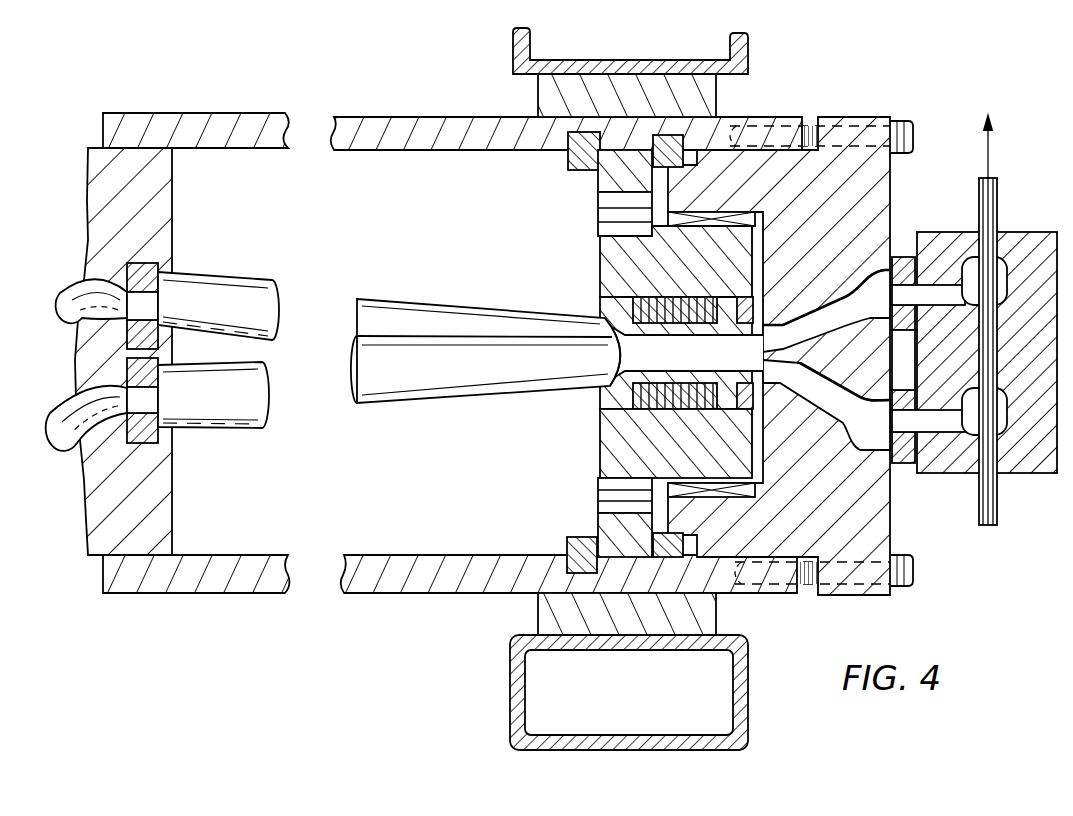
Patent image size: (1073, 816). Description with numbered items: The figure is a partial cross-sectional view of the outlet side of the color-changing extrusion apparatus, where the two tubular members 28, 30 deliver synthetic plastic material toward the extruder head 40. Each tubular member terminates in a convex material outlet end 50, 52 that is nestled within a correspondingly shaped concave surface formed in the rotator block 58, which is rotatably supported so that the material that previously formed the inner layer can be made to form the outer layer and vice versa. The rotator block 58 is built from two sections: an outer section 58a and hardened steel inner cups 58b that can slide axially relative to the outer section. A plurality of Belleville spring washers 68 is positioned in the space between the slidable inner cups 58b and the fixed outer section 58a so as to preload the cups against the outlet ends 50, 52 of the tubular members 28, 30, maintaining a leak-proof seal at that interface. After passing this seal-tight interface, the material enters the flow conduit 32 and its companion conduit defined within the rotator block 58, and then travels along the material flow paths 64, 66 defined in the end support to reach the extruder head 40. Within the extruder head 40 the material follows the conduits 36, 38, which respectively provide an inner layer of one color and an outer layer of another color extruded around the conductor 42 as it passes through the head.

The tubular member 28 is at (459, 364).
The tubular member 30 is at (234, 310).
The synthetic material flow conduit 32 is at (760, 353).
The conduit (flow path) 36 is at (942, 420).
The conduit (flow path) 38 is at (933, 290).
The extruder head 40 is at (1037, 257).
The conductor 42 is at (990, 498).
The material outlet end 50 is at (596, 352).
The material outlet end 52 is at (597, 318).
The rotator block 58 is at (636, 353).
The outer section 58a is at (615, 428).
The inner cups 58b is at (598, 293).
The material flow path 64 is at (767, 350).
The material flow path 66 is at (800, 363).
The Belleville spring washers 68 is at (640, 272).